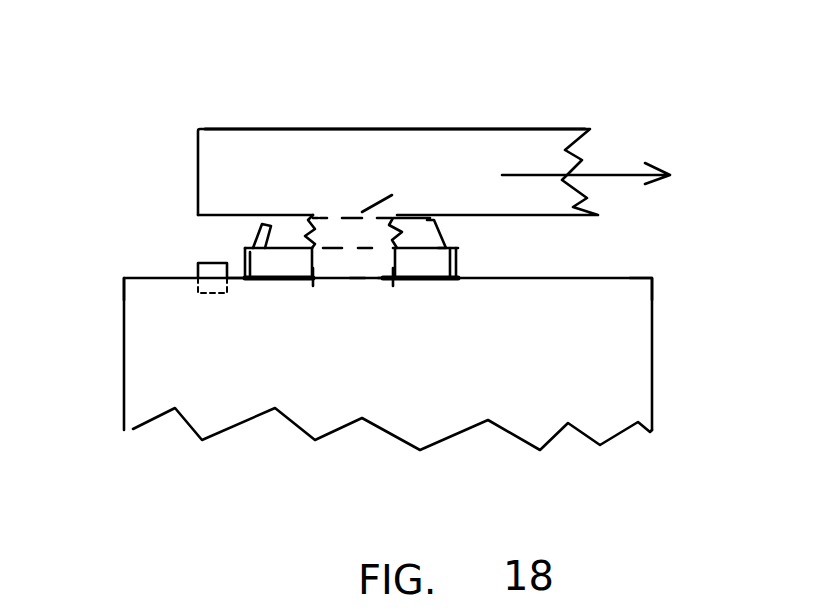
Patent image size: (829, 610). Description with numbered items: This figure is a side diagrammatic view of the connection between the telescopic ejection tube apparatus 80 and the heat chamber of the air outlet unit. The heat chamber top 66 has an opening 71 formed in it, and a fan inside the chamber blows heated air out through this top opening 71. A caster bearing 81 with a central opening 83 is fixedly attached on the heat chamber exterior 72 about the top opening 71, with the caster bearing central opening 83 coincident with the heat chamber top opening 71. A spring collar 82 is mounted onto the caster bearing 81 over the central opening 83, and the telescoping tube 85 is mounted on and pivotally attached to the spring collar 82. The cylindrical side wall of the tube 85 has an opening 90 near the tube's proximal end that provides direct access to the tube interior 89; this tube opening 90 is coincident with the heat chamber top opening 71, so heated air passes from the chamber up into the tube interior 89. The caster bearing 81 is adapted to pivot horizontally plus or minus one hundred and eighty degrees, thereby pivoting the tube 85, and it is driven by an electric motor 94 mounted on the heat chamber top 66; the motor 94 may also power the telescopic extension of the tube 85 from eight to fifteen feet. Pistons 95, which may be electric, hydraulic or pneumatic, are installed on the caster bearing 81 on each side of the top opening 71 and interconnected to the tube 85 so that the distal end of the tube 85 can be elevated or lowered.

The telescopic ejection tube apparatus 80 is at (398, 128).
The telescoping tube 85 is at (263, 128).
The tube interior 89 is at (365, 178).
The caster bearing central opening 83 is at (332, 272).
The tube opening 90 is at (396, 194).
The spring collar 82 is at (306, 232).
The caster bearing 81 is at (435, 262).
The pistons 95 is at (256, 242).
The electric motor 94 is at (197, 267).
The heat chamber top opening 71 is at (358, 288).
The heat chamber top 66 is at (147, 280).
The heat chamber exterior 72 is at (620, 278).